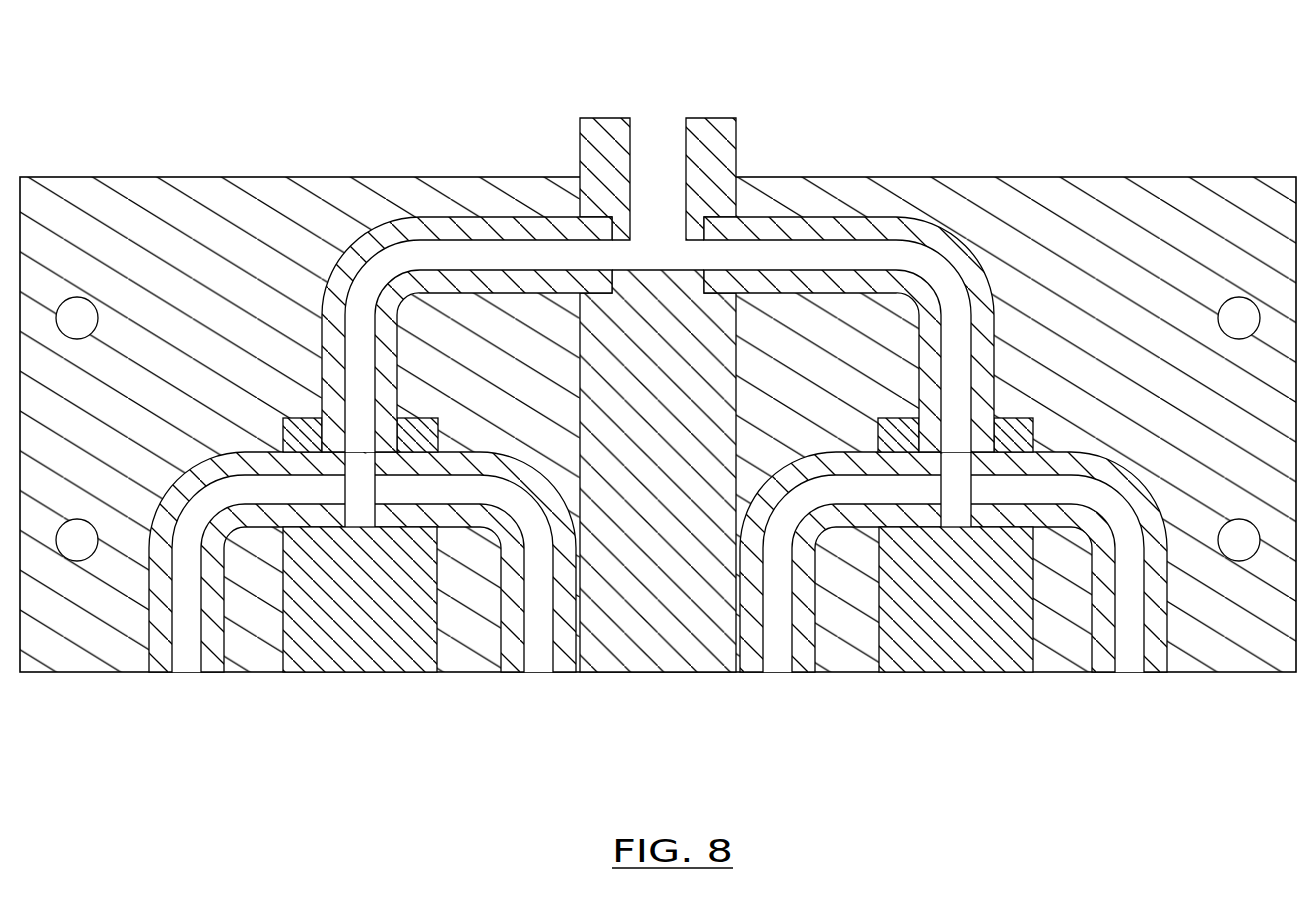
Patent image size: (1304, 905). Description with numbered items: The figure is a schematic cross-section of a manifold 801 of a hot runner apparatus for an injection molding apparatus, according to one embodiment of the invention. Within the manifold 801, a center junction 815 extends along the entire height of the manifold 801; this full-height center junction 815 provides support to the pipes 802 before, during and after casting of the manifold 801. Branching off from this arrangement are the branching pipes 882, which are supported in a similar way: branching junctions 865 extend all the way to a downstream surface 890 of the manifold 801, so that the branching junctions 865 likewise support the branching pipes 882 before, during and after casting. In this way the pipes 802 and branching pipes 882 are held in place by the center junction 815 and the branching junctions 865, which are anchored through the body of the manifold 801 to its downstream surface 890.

The manifold 801 is at (659, 403).
The pipes 802 is at (362, 257).
The center junction 815 is at (657, 653).
The branching junctions 865 is at (365, 653).
The branching pipes 882 is at (215, 467).
The downstream surface 890 is at (92, 673).